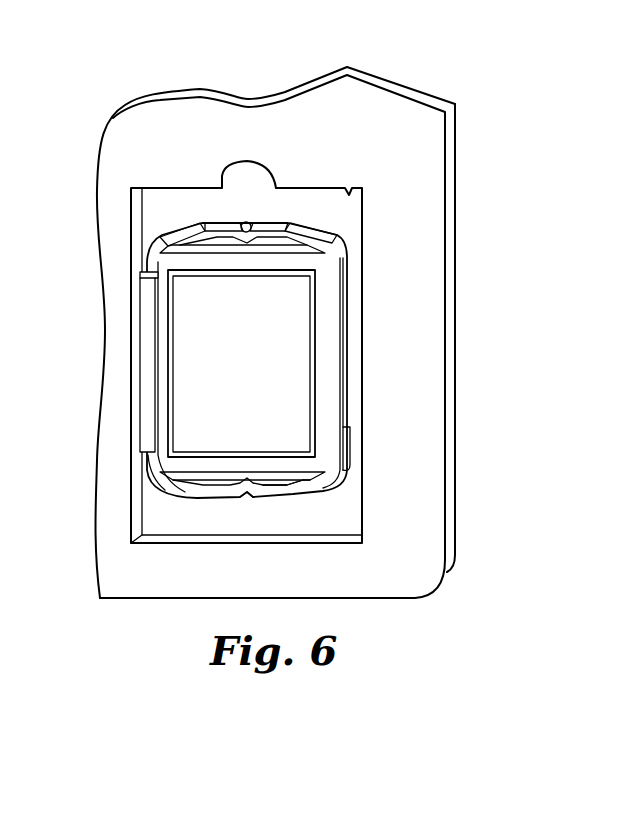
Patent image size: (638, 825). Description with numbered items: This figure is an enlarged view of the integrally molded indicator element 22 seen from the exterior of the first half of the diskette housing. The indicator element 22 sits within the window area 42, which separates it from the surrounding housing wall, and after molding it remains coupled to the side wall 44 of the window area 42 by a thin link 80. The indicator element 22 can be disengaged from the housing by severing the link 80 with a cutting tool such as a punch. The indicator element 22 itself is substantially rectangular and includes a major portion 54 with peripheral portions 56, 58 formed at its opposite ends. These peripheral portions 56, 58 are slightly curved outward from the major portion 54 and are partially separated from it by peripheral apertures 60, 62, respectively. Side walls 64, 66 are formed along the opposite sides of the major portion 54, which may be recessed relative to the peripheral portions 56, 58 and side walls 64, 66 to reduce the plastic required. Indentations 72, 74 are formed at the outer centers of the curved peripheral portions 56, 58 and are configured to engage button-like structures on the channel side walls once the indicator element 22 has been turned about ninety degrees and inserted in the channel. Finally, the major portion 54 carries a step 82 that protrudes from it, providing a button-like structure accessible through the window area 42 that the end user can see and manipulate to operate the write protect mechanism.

The indicator element 22 is at (183, 222).
The window area 42 is at (349, 193).
The side wall of window area 44 is at (138, 517).
The major portion 54 is at (330, 318).
The peripheral portion 56 is at (163, 242).
The peripheral portion 58 is at (193, 495).
The peripheral aperture 60 is at (330, 240).
The peripheral aperture 62 is at (277, 484).
The side wall 64 is at (347, 448).
The side wall 66 is at (148, 470).
The indentation 72 is at (250, 222).
The indentation 74 is at (245, 496).
The thin link 80 is at (148, 377).
The step 82 is at (298, 365).